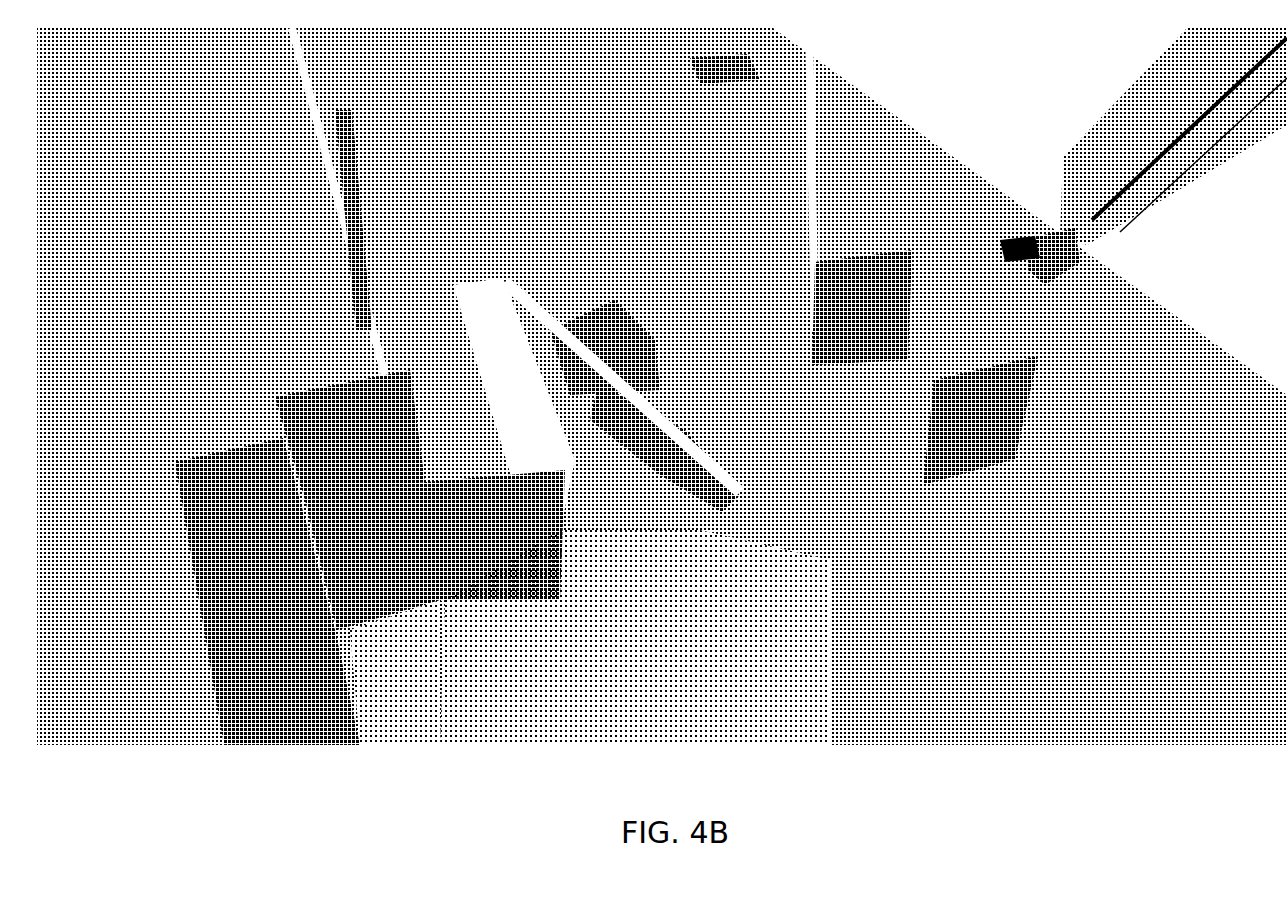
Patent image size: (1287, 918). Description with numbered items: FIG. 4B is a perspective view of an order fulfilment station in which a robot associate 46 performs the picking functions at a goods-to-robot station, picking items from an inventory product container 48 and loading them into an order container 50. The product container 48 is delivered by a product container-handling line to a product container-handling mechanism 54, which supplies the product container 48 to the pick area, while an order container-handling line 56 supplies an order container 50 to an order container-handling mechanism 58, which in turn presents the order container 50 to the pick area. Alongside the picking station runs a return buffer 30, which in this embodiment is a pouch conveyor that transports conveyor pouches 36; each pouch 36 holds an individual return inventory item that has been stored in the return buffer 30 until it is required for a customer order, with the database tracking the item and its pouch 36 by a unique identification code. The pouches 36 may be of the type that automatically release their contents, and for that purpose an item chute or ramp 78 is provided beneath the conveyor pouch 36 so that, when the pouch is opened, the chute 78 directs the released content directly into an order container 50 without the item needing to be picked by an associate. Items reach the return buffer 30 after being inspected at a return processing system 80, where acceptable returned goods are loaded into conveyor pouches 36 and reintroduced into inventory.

The return buffer 30 is at (940, 212).
The conveyor pouch 36 is at (912, 165).
The robot associate 46 is at (672, 268).
The inventory product container 48 is at (625, 382).
The order container 50 is at (655, 480).
The product container-handling mechanism 54 is at (330, 418).
The order container-handling line 56 is at (190, 477).
The order container-handling mechanism 58 is at (392, 560).
The item chute or ramp 78 is at (848, 460).
The return processing system 80 is at (1122, 651).